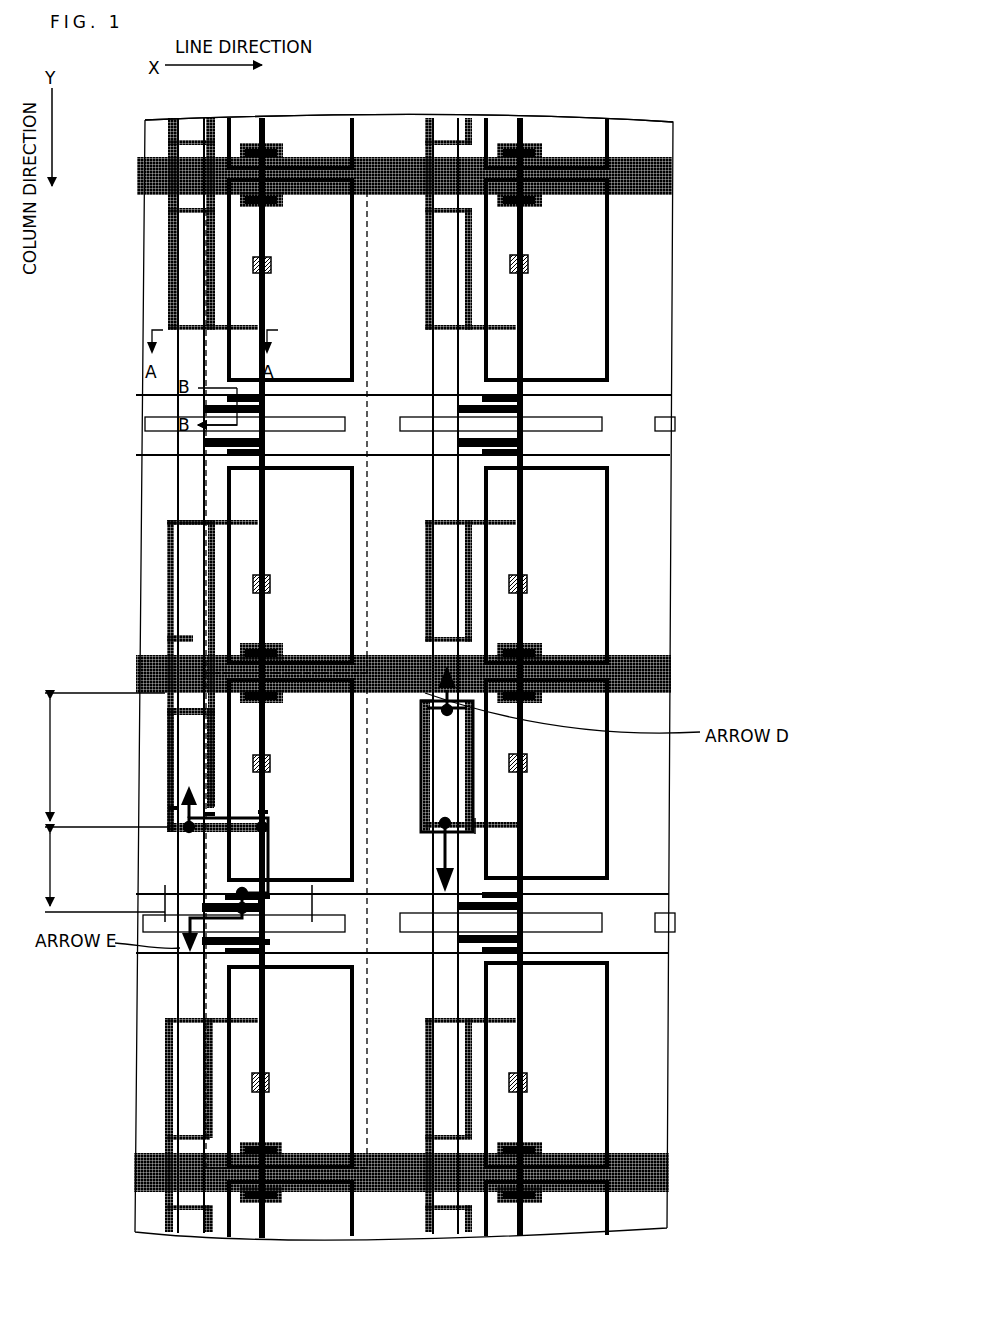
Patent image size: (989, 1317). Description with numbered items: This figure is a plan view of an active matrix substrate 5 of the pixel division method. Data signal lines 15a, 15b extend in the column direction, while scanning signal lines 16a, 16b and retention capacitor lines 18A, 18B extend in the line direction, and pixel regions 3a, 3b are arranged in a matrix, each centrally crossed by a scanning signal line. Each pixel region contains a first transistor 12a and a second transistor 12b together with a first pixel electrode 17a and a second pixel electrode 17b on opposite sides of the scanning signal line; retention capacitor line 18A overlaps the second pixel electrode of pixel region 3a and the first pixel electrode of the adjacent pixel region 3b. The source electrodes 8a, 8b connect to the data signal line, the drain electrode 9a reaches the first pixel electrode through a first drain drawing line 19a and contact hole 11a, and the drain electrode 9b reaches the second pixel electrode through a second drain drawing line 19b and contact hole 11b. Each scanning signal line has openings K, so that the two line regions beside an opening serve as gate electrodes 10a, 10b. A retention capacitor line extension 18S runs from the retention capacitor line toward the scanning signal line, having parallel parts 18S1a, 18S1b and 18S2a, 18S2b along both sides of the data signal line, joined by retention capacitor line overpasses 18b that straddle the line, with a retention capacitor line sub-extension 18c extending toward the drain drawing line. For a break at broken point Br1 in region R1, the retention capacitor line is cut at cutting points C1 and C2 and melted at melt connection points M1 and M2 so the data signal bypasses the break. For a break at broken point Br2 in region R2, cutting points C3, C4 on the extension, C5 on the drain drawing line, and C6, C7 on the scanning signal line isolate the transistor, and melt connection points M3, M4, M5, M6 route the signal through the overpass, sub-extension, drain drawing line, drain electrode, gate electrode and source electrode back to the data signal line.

The active matrix substrate 5 is at (722, 108).
The data signal line 15a is at (193, 130).
The data signal line 15b is at (448, 130).
The first pixel electrode 17a is at (357, 268).
The second pixel electrode 17b is at (357, 585).
The scanning signal line 16a is at (668, 402).
The scanning signal line 16b is at (668, 897).
The pixel region 3a is at (368, 990).
The pixel region 3b is at (368, 490).
The retention capacitor line 18A is at (668, 672).
The retention capacitor line 18B is at (668, 1167).
The retention capacitor line sub-extension 18c is at (207, 522).
The retention capacitor line overpass 18b is at (190, 640).
The retention capacitor line extension 18S is at (158, 750).
The first retention capacitor line extension 18S1a is at (168, 545).
The first retention capacitor line extension 18S1b is at (205, 597).
The first retention capacitor line extension 18S2a is at (168, 720).
The first retention capacitor line extension 18S2b is at (168, 770).
The first drain drawing line 19a is at (270, 735).
The second drain drawing line 19b is at (270, 1050).
The contact hole 11a is at (272, 765).
The contact hole 11b is at (272, 1083).
The first transistor 12a is at (205, 895).
The second transistor 12b is at (205, 950).
The source electrode 8a is at (263, 907).
The source electrode 8b is at (265, 952).
The drain electrode 9a is at (268, 895).
The drain electrode 9b is at (268, 958).
The gate electrode 10a is at (263, 902).
The gate electrode 10b is at (263, 955).
The broken point Br1 is at (445, 792).
The broken point Br2 is at (185, 858).
The melt connection point M1 is at (445, 712).
The melt connection point M2 is at (445, 826).
The melt connection point M3 is at (182, 824).
The melt connection point M4 is at (265, 825).
The melt connection point M5 is at (242, 888).
The melt connection point M6 is at (242, 912).
The cutting point C1 is at (433, 710).
The cutting point C2 is at (475, 830).
The cutting point C3 is at (172, 808).
The cutting point C4 is at (210, 812).
The cutting point C5 is at (263, 810).
The cutting point C6 is at (317, 903).
The cutting point C7 is at (160, 905).
The region R1 is at (99, 760).
The region R2 is at (96, 872).
The opening K is at (582, 922).